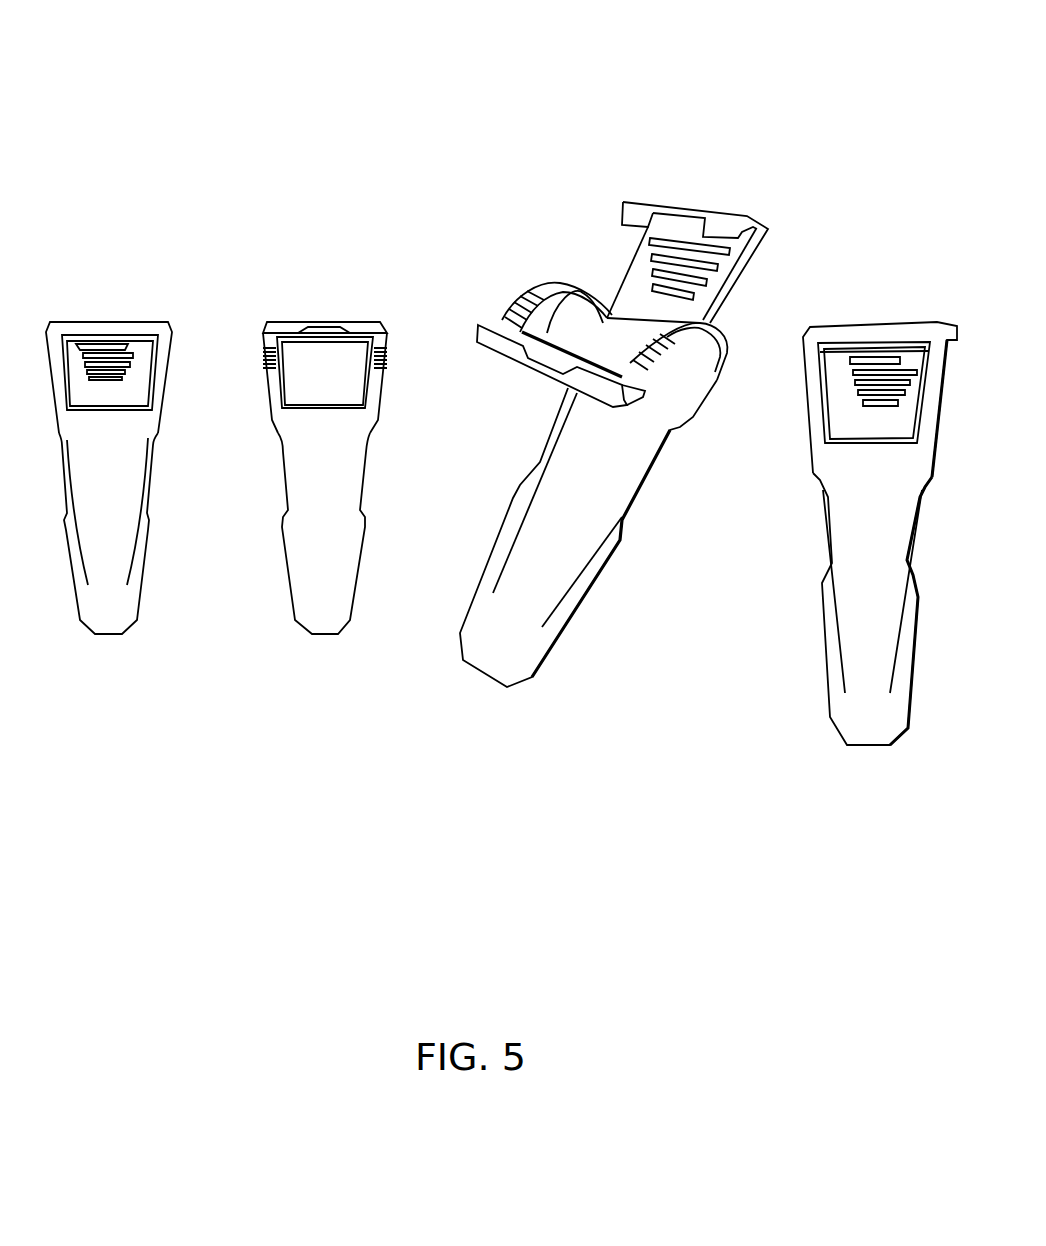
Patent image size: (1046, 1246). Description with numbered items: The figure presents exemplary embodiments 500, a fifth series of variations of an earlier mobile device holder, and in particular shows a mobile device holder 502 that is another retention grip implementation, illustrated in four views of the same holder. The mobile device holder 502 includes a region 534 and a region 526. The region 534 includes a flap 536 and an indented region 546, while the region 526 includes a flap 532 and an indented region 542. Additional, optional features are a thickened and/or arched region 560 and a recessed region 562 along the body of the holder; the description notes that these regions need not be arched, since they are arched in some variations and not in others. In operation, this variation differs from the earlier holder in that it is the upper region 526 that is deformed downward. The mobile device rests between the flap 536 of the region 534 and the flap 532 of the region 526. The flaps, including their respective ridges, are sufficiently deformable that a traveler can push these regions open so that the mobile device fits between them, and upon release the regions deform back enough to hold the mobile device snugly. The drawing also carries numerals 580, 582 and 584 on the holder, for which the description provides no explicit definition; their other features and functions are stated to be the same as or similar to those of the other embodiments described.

The exemplary embodiments 500 is at (501, 420).
The mobile device holder 502 is at (107, 635).
The region 526 is at (125, 322).
The flap 532 is at (493, 325).
The region 534 is at (69, 365).
The flap 536 is at (622, 212).
The indented region 542 is at (547, 337).
The indented region 546 is at (680, 212).
The thickened and/or arched region 560 is at (562, 600).
The recessed region 562 is at (630, 517).
The alternate head housing 580 is at (888, 410).
The hinge 582 is at (622, 337).
The flap panel 584 is at (687, 257).